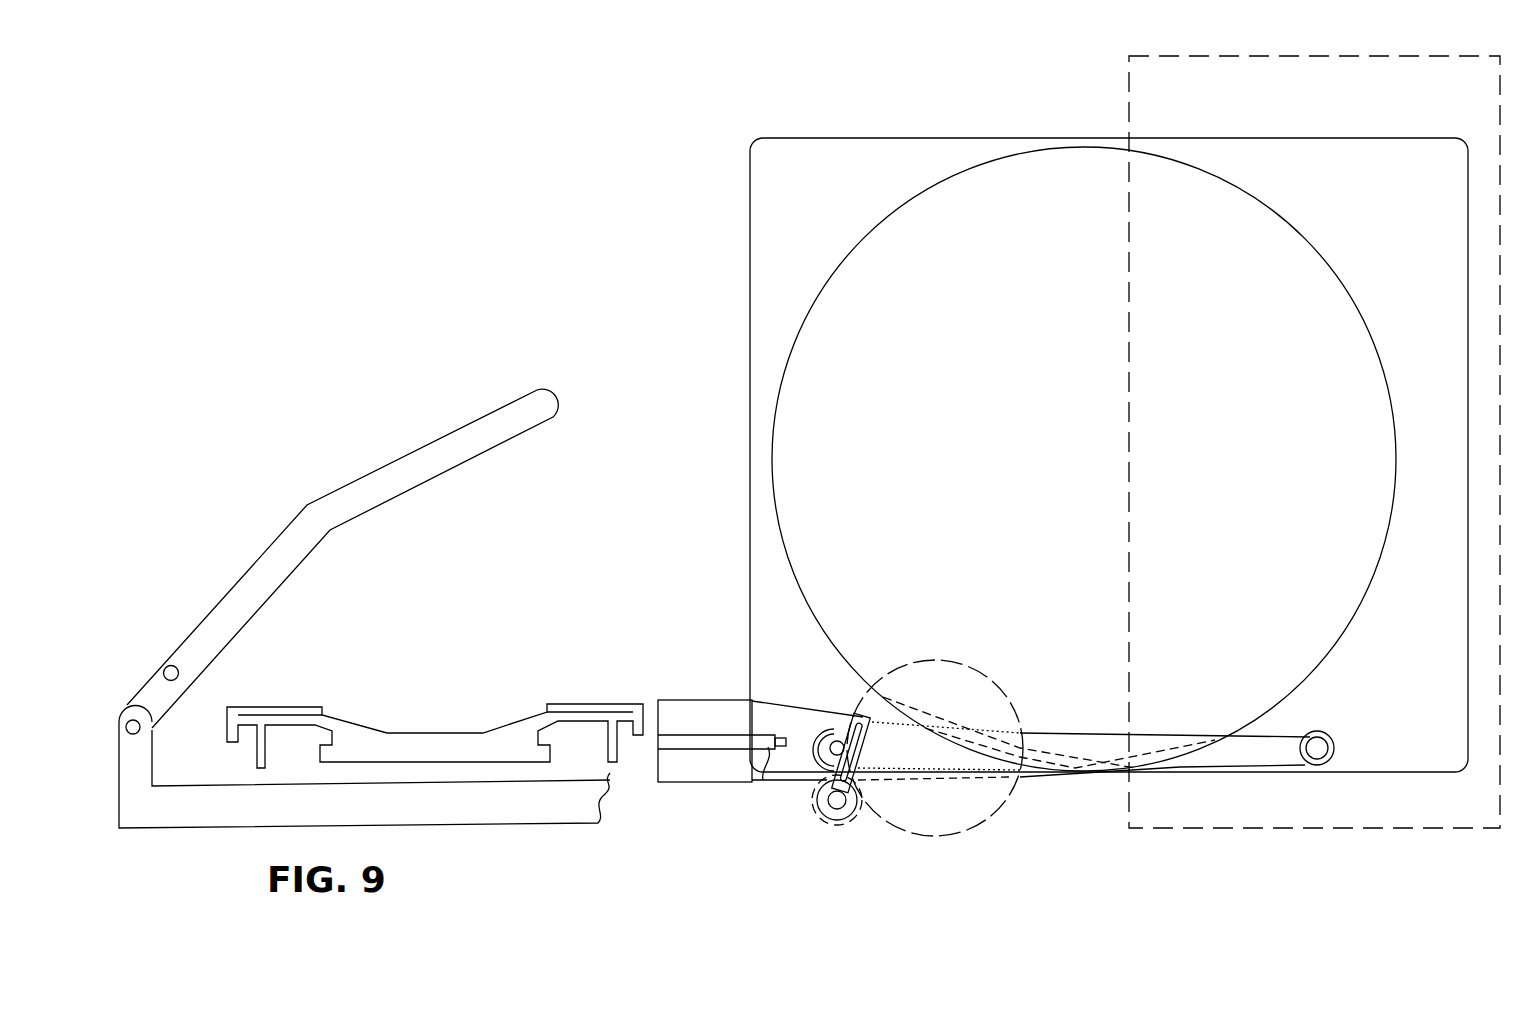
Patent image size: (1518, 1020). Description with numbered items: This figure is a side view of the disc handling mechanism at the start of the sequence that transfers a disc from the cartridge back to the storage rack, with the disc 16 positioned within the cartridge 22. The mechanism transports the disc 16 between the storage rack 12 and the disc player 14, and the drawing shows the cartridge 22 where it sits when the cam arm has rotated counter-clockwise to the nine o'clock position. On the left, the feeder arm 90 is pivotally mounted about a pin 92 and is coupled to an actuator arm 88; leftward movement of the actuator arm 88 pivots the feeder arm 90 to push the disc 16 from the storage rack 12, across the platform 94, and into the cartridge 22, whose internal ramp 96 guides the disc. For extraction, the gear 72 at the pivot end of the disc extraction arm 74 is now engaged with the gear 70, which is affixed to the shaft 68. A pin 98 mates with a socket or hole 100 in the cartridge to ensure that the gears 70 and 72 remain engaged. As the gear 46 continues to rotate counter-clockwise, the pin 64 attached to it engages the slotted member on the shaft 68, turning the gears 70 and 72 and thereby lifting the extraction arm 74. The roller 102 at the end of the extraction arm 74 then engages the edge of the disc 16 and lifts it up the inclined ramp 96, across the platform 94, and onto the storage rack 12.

The storage rack 12 is at (597, 702).
The disc player 14 is at (1255, 830).
The disc 16 is at (798, 327).
The cartridge 22 is at (833, 140).
The gear 46 is at (983, 675).
The pin 64 is at (860, 712).
The shaft 68 is at (855, 818).
The gear 70 is at (822, 818).
The gear 72 is at (813, 758).
The disc extraction arm 74 is at (1165, 733).
The actuator arm 88 is at (427, 825).
The feeder arm 90 is at (250, 555).
The pin 92 is at (165, 668).
The platform 94 is at (712, 700).
The internal ramp 96 is at (778, 700).
The pin 98 is at (685, 752).
The socket or hole 100 is at (755, 782).
The roller 102 is at (1320, 731).